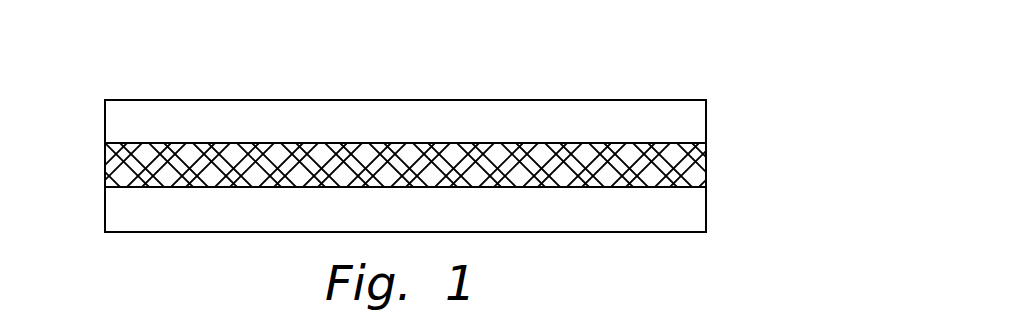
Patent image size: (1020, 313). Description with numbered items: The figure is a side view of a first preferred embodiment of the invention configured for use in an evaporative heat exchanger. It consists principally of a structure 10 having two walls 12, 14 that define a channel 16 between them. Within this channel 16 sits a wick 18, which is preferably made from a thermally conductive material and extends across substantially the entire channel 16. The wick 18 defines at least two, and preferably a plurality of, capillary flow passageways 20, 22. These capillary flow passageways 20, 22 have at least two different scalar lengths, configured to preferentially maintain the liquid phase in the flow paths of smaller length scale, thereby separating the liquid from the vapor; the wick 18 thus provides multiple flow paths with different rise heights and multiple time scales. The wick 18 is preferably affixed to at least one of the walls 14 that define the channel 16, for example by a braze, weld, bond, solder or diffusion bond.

The structure 10 is at (710, 52).
The wall 12 is at (645, 136).
The wall 14 is at (645, 220).
The channel 16 is at (409, 112).
The wick 18 is at (105, 168).
The capillary flow passageway 20 is at (348, 155).
The capillary flow passageway 22 is at (422, 173).